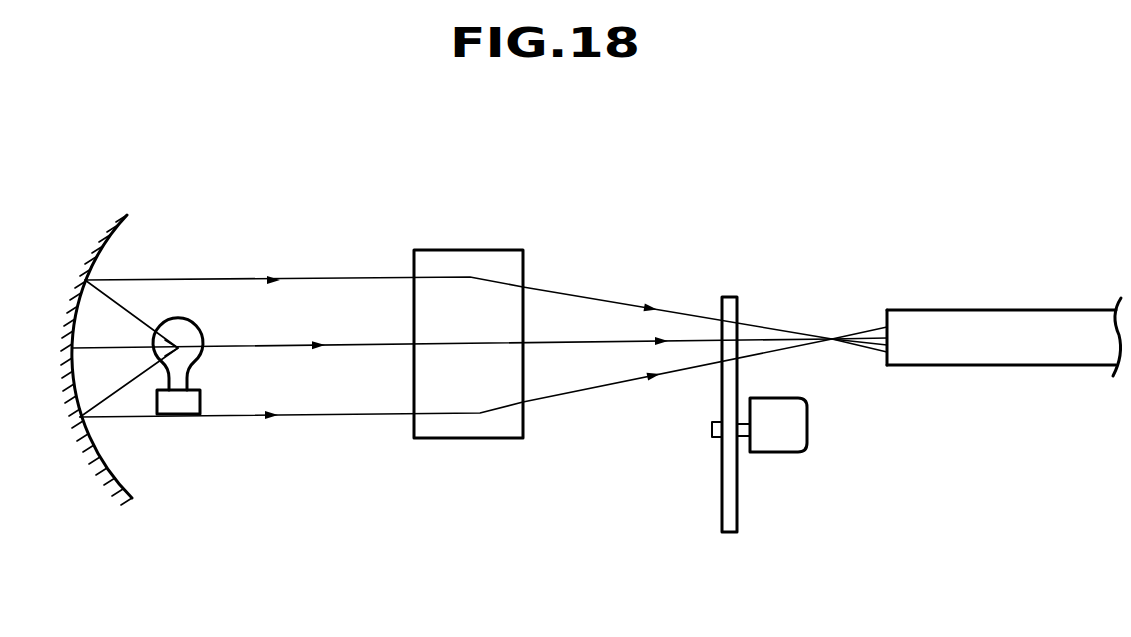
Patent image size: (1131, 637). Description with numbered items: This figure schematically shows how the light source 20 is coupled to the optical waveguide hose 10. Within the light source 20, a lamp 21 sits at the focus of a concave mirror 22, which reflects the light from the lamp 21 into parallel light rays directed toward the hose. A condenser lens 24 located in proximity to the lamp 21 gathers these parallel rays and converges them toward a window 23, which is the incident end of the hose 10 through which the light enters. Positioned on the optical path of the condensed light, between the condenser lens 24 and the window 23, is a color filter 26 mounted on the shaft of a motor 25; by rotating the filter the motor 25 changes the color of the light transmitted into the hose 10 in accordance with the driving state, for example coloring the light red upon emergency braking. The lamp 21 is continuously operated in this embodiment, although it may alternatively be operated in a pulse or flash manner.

The optical waveguide hose 10 is at (1037, 307).
The light source 20 is at (293, 246).
The lamp 21 is at (200, 334).
The concave mirror 22 is at (118, 481).
The window 23 is at (885, 320).
The condenser lens 24 is at (485, 440).
The motor 25 is at (797, 442).
The color filter 26 is at (722, 496).